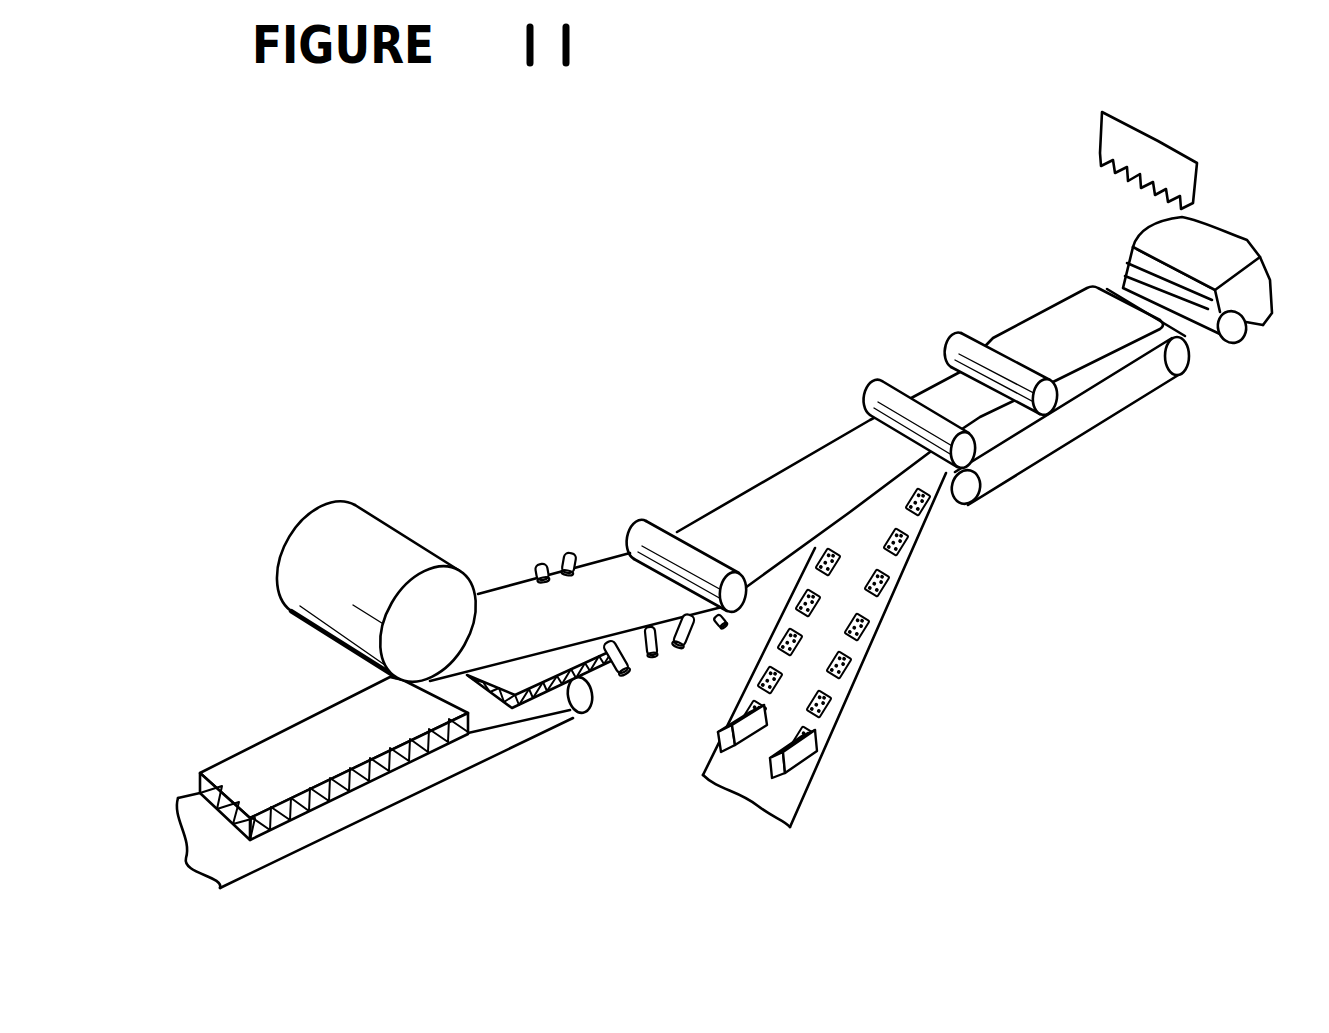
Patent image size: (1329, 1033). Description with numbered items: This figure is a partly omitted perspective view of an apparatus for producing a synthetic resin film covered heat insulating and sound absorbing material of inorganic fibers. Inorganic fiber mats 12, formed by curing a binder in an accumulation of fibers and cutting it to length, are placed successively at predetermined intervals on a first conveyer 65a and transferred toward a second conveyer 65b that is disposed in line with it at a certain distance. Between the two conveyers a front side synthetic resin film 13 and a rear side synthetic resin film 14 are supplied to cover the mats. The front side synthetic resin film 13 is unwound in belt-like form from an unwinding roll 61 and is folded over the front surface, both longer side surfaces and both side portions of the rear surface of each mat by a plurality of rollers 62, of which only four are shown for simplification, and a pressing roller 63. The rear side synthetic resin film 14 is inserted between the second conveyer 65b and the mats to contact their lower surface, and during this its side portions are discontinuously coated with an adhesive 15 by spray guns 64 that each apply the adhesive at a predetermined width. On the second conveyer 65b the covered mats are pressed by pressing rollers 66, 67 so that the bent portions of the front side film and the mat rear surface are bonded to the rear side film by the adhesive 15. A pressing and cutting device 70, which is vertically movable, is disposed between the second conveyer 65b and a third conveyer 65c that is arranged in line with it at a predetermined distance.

The inorganic fiber mats 12 is at (293, 743).
The front side synthetic resin film 13 is at (503, 627).
The rear side synthetic resin film 14 is at (795, 790).
The adhesive 15 is at (845, 673).
The unwinding roll 61 is at (357, 527).
The rollers 62 is at (570, 553).
The pressing roller 63 is at (660, 537).
The spray guns 64 is at (718, 742).
The first conveyer 65a is at (420, 773).
The second conveyer 65b is at (1110, 407).
The third conveyer 65c is at (1255, 318).
The pressing roller 66 is at (880, 403).
The pressing roller 67 is at (967, 350).
The pressing and cutting device 70 is at (1102, 133).